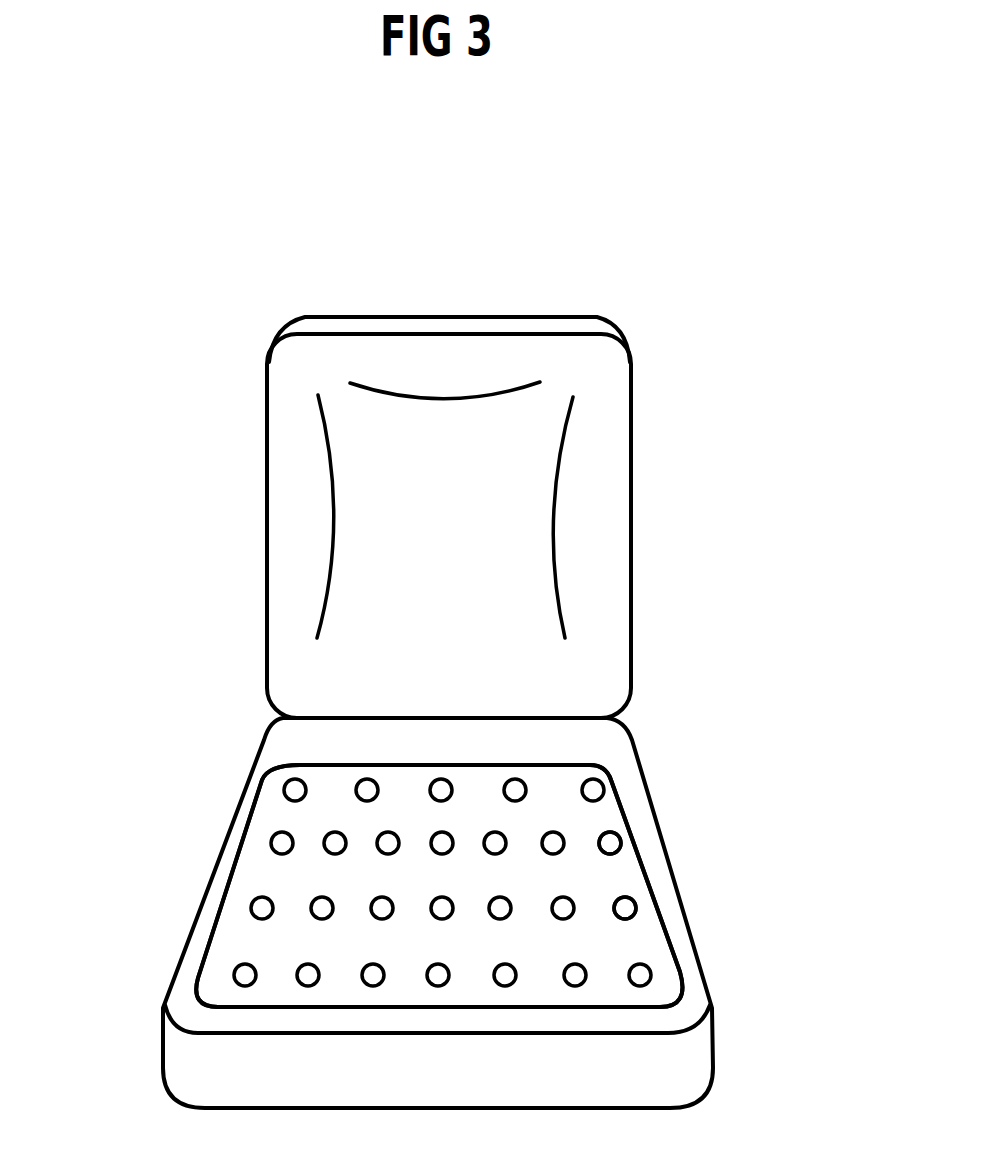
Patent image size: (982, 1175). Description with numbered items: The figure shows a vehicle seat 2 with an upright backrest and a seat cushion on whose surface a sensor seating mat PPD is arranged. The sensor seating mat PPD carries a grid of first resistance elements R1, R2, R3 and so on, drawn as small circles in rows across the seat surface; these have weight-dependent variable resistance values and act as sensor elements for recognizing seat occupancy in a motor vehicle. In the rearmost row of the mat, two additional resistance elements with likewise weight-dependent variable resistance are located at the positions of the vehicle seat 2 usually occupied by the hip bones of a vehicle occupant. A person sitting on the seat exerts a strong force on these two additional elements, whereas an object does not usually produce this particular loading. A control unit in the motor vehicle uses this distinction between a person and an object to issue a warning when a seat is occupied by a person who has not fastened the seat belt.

The vehicle seat 2 is at (510, 272).
The first resistance element R1 is at (604, 792).
The first resistance element R2 is at (708, 843).
The first resistance element R3 is at (708, 852).
The sensor seating mat PPD is at (194, 972).